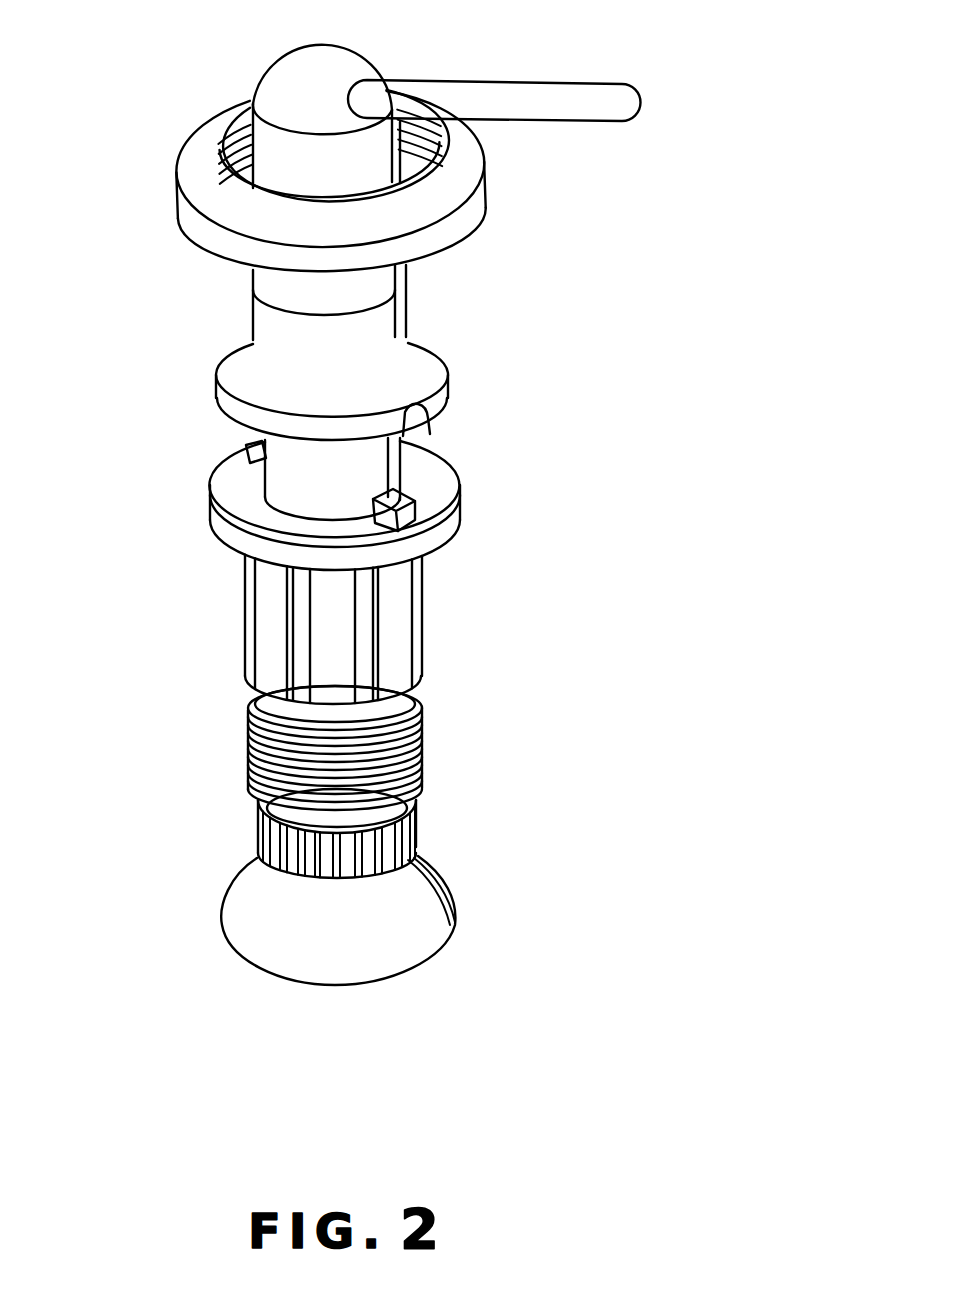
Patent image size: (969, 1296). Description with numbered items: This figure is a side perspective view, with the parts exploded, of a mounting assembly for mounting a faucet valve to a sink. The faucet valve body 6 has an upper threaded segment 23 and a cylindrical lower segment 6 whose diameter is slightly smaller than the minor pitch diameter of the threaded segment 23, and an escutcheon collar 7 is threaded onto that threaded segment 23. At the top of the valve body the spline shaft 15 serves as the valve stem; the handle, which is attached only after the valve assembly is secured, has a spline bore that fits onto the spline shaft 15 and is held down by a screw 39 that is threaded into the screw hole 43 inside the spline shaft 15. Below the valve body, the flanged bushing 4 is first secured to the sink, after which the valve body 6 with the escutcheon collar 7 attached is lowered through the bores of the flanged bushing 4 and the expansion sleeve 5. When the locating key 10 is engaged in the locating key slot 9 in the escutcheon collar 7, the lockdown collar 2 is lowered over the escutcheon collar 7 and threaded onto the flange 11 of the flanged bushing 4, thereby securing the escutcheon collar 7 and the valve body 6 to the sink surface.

The lockdown collar 2 is at (458, 190).
The flanged bushing 4 is at (395, 583).
The expansion sleeve 5 is at (250, 730).
The faucet valve body 6 is at (387, 707).
The escutcheon collar 7 is at (428, 357).
The locating key slot 9 is at (415, 417).
The locating key 10 is at (415, 517).
The flange 11 is at (430, 473).
The spline shaft 15 is at (427, 915).
The upper threaded segment 23 is at (277, 288).
The screw 39 is at (593, 98).
The screw hole 43 is at (415, 800).